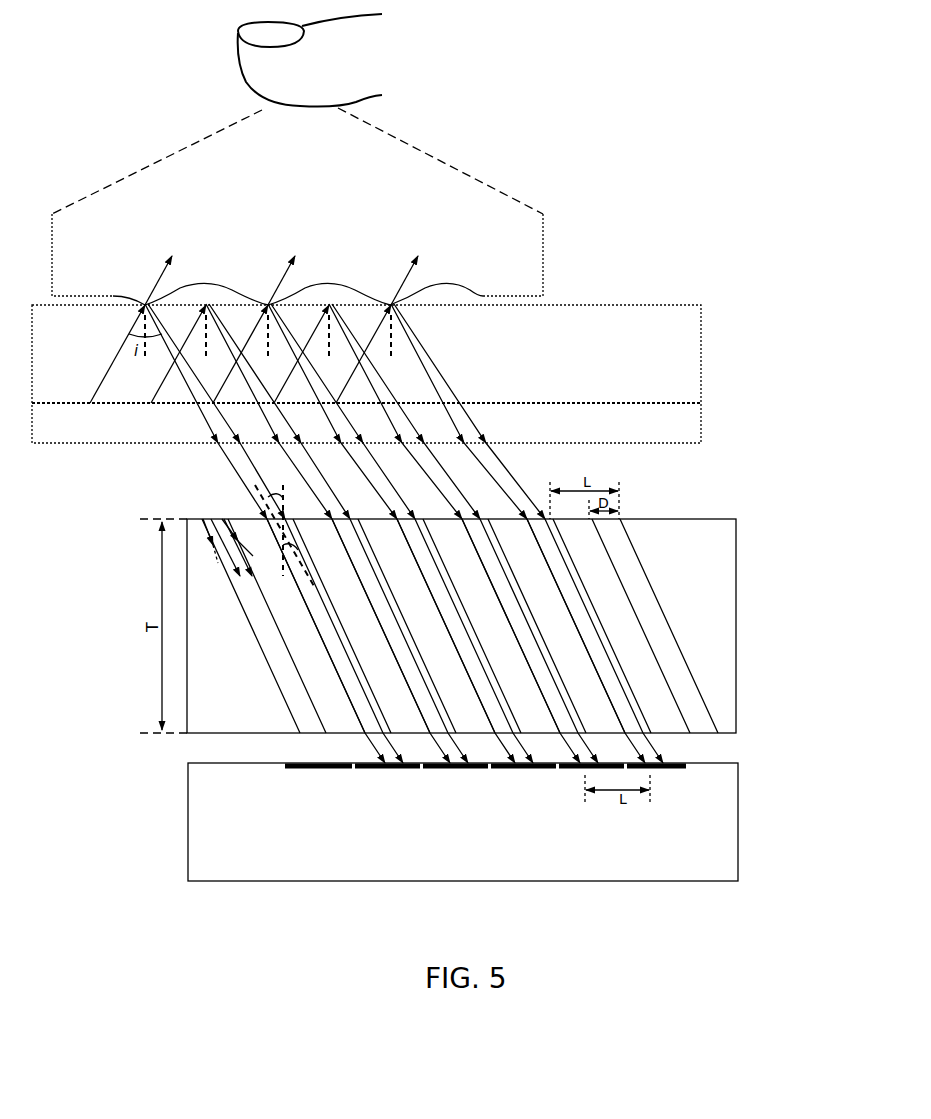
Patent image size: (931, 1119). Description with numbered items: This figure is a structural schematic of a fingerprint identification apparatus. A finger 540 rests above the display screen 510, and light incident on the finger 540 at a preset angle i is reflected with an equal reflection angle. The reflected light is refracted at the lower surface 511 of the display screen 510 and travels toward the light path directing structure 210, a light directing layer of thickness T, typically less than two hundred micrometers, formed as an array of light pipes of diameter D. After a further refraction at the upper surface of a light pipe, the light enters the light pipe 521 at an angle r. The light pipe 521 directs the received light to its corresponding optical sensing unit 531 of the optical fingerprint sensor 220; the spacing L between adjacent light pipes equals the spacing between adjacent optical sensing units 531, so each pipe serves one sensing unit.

The finger 540 is at (310, 60).
The display screen 510 is at (620, 330).
The reflective interface of cover plate 511 is at (592, 407).
The light path directing structure 210 is at (514, 602).
The light pipe 521 is at (350, 660).
The optical sensing unit 531 is at (365, 769).
The optical fingerprint sensor 220 is at (390, 853).